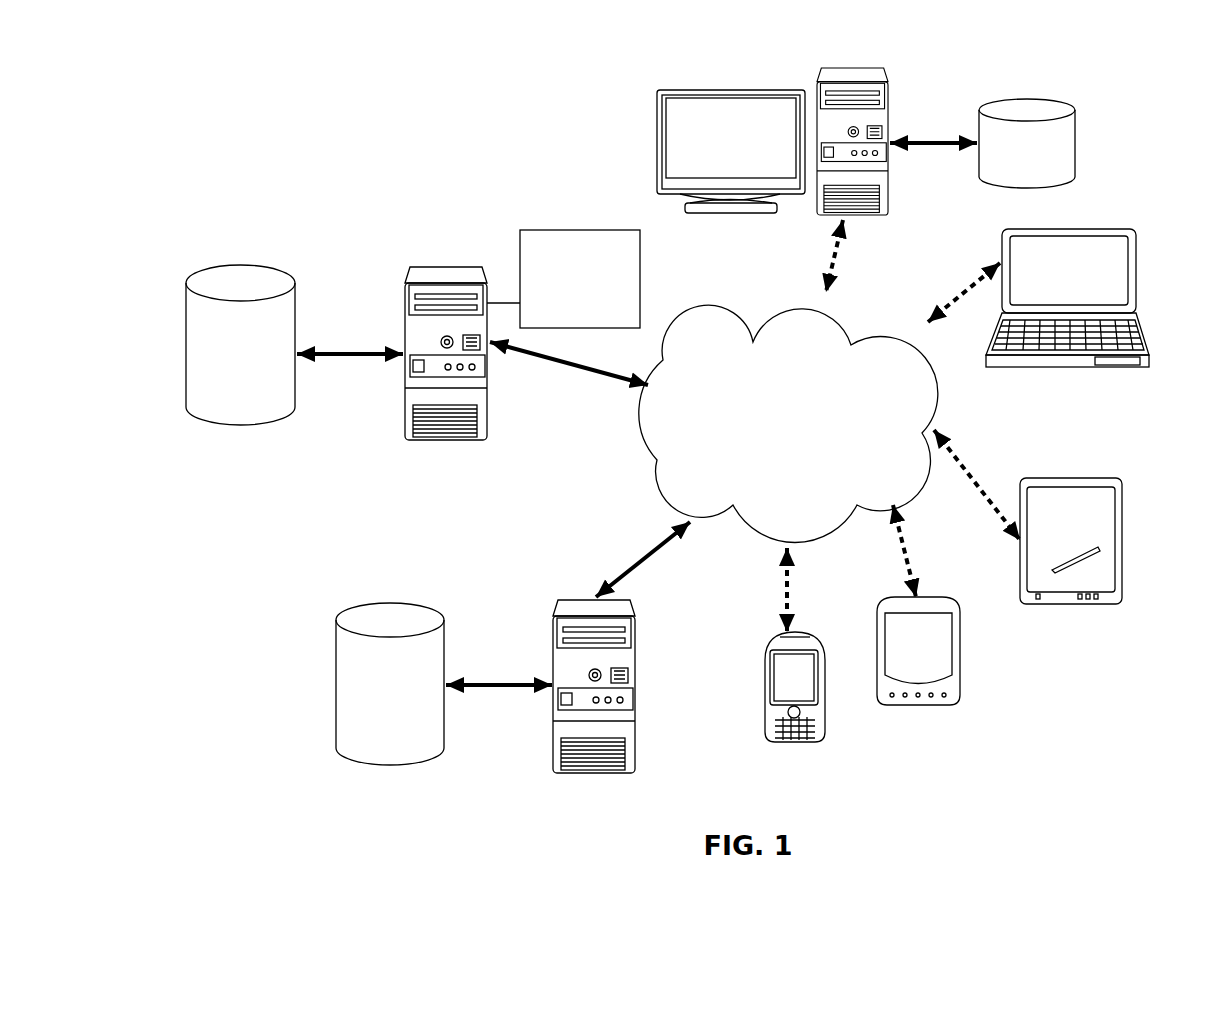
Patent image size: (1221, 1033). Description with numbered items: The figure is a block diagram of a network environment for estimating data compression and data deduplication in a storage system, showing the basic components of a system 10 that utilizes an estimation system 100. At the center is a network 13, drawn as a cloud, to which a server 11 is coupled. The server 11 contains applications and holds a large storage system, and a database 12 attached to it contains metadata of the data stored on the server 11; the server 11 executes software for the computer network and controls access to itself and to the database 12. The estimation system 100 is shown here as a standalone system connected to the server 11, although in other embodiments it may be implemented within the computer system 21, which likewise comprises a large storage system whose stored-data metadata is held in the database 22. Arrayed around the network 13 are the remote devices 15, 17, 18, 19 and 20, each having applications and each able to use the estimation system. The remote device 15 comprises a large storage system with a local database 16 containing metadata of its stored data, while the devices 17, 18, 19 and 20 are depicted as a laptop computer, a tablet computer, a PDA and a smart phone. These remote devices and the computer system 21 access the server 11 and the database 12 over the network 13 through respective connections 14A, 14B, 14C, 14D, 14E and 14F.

The system 10 is at (387, 140).
The server 11 is at (442, 267).
The database 12 is at (246, 265).
The network 13 is at (712, 310).
The connection 14A is at (832, 258).
The connection 14B is at (952, 297).
The connection 14C is at (980, 478).
The connection 14D is at (905, 551).
The connection 14E is at (780, 590).
The connection 14F is at (637, 562).
The remote device 15 is at (846, 68).
The database 16 is at (1078, 146).
The remote device 17 is at (1140, 270).
The remote device 18 is at (1102, 478).
The remote device 19 is at (960, 670).
The remote device 20 is at (765, 693).
The computer system 21 is at (640, 672).
The database 22 is at (392, 603).
The estimation system 100 is at (563, 279).